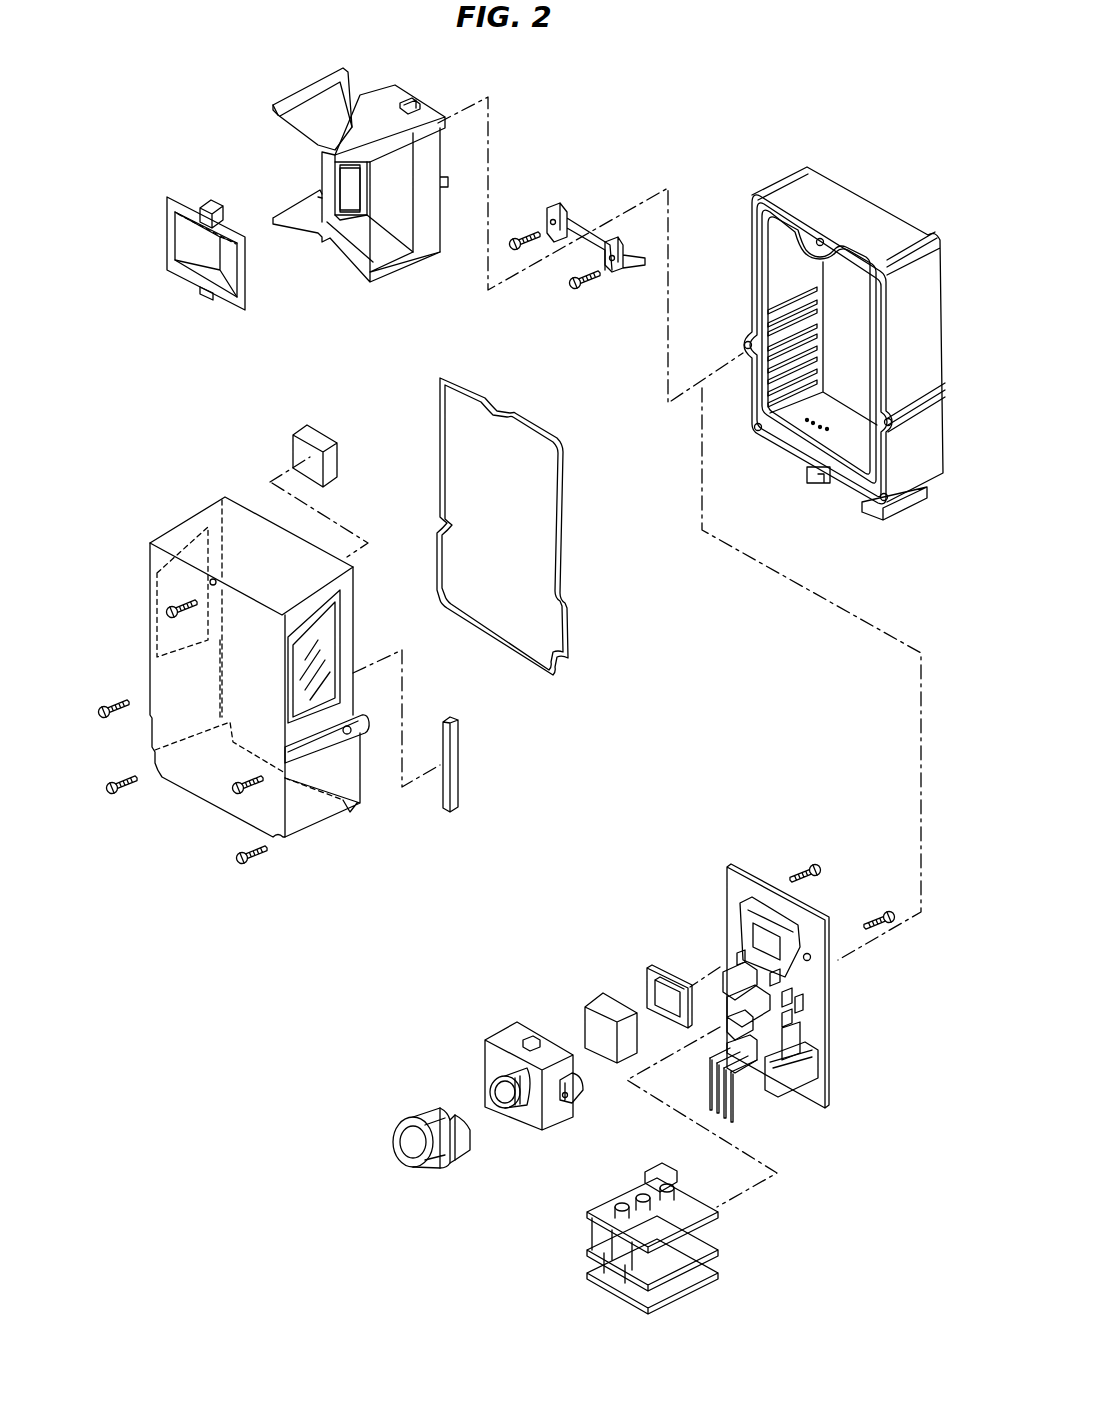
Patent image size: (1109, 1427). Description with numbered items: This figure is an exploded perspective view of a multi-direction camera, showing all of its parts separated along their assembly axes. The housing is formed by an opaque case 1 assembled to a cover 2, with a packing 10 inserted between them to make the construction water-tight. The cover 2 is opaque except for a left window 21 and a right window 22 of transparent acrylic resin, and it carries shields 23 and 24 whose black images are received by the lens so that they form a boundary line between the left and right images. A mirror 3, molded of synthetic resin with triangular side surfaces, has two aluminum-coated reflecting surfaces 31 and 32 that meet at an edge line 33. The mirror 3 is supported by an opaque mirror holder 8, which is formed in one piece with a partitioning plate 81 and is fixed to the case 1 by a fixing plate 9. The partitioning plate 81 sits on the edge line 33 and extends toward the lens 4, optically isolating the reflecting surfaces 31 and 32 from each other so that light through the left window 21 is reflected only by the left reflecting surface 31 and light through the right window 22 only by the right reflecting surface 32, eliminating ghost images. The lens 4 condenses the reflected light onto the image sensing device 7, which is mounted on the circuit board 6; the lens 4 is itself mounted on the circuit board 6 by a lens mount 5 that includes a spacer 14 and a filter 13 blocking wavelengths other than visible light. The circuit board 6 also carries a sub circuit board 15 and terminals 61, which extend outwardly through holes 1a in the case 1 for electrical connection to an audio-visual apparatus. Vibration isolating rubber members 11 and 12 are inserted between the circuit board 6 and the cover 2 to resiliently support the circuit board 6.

The case 1 is at (857, 190).
The holes 1a is at (798, 420).
The cover 2 is at (308, 827).
The mirror 3 is at (176, 197).
The lens 4 is at (403, 1117).
The lens mount 5 is at (485, 1057).
The circuit board 6 is at (828, 1027).
The image sensing device 7 is at (762, 882).
The mirror holder 8 is at (402, 88).
The partitioning plate 81 is at (348, 188).
The fixing plate 9 is at (585, 228).
The packing 10 is at (563, 573).
The vibration isolating rubber member 11 is at (307, 427).
The vibration isolating rubber member 12 is at (462, 783).
The filter 13 is at (585, 1010).
The spacer 14 is at (647, 977).
The sub circuit board 15 is at (730, 1210).
The left window 21 is at (160, 575).
The right window 22 is at (283, 718).
The shield 23 is at (215, 543).
The shield 24 is at (347, 633).
The left reflecting surface 31 is at (190, 240).
The right reflecting surface 32 is at (240, 276).
The edge line 33 is at (222, 210).
The terminals 61 is at (737, 1103).